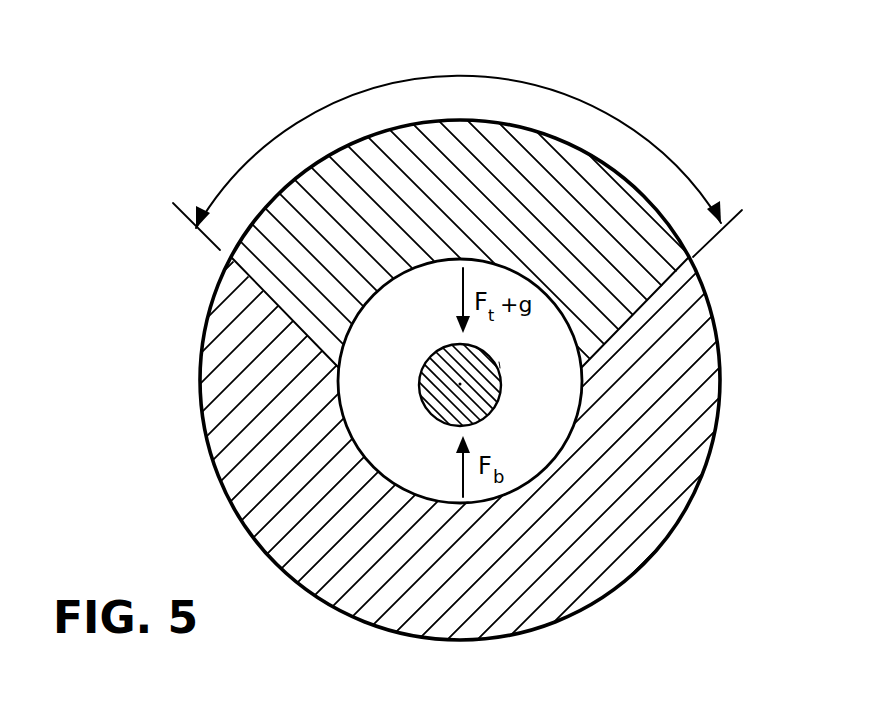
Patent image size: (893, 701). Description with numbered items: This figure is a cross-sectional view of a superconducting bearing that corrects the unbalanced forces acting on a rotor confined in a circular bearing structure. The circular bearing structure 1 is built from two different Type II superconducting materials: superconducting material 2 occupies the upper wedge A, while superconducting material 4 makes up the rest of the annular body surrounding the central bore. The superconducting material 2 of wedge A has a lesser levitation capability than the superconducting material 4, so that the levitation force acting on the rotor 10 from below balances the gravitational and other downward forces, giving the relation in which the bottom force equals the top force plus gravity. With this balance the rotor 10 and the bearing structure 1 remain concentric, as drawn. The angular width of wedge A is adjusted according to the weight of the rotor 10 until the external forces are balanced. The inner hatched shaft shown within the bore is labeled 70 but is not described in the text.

The circular bearing structure 1 is at (732, 443).
The superconducting material 2 is at (496, 122).
The superconducting material 4 is at (213, 466).
The rotor 10 is at (497, 364).
The shaft 70 is at (430, 378).
The wedge A is at (462, 72).